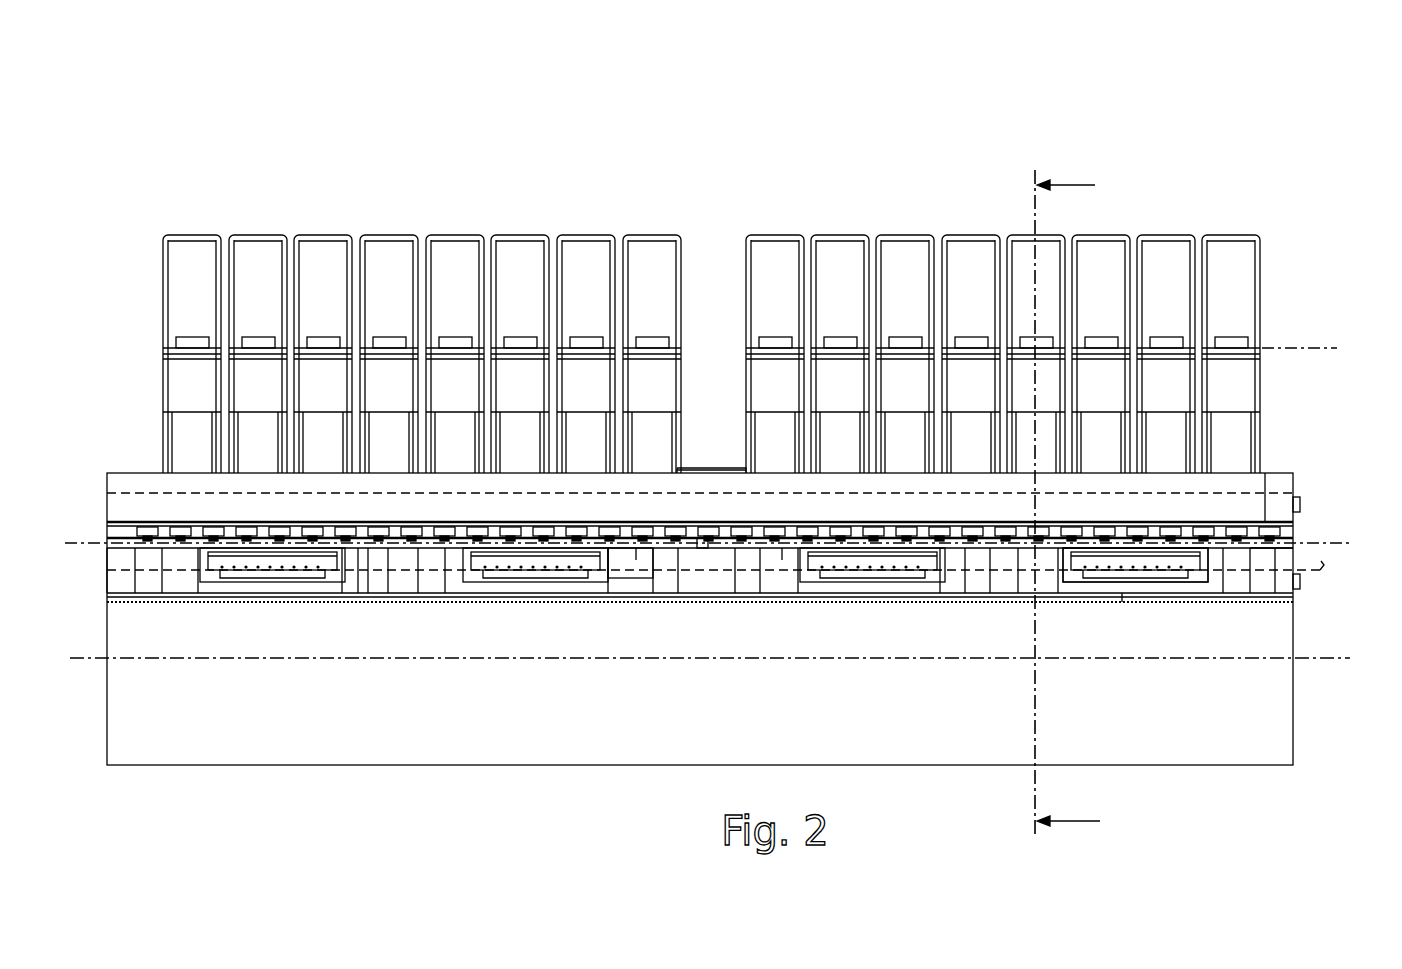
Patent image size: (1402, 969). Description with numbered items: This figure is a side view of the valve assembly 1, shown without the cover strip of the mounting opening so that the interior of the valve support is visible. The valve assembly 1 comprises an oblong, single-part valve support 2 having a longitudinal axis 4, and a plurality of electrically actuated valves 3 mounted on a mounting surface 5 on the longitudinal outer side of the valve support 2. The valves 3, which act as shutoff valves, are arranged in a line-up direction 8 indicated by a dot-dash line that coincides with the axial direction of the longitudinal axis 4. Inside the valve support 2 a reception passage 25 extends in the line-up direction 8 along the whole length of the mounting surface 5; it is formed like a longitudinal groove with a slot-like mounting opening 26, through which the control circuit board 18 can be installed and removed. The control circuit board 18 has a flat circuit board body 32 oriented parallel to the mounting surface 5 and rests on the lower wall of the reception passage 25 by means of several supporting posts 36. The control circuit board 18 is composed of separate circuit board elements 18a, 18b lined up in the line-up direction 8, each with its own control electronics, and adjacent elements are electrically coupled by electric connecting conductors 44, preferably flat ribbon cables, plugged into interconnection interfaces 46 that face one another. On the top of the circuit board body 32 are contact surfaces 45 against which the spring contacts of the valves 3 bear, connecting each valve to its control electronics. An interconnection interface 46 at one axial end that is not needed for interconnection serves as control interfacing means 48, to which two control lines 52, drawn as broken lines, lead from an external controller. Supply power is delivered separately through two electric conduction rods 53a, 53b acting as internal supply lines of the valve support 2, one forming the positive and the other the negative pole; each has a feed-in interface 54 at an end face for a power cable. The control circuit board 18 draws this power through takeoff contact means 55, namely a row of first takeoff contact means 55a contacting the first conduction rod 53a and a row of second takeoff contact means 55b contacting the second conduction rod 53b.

The valve assembly 1 is at (1255, 198).
The valve support 2 is at (462, 745).
The electrically actuated valves 3 is at (443, 253).
The longitudinal axis 4 is at (553, 665).
The mounting surface 5 is at (712, 462).
The line-up direction 8 is at (1305, 345).
The control circuit board 18 is at (707, 543).
The circuit board element 18a is at (973, 553).
The circuit board element 18b is at (375, 553).
The reception passage 25 is at (615, 580).
The mounting opening 26 is at (100, 592).
The circuit board body 32 is at (640, 547).
The supporting posts 36 is at (150, 590).
The electric connecting conductors 44 is at (705, 565).
The contact surfaces 45 is at (655, 515).
The interconnection interfaces 46 is at (260, 583).
The control interfacing means 48 is at (1152, 583).
The control lines 52 is at (1226, 585).
The first electric conduction rod 53a is at (1268, 500).
The second electric conduction rod 53b is at (1125, 600).
The feed-in interface 54 is at (1313, 508).
The takeoff contact means 55 is at (708, 534).
The first takeoff contact means 55a is at (418, 522).
The second takeoff contact means 55b is at (352, 575).